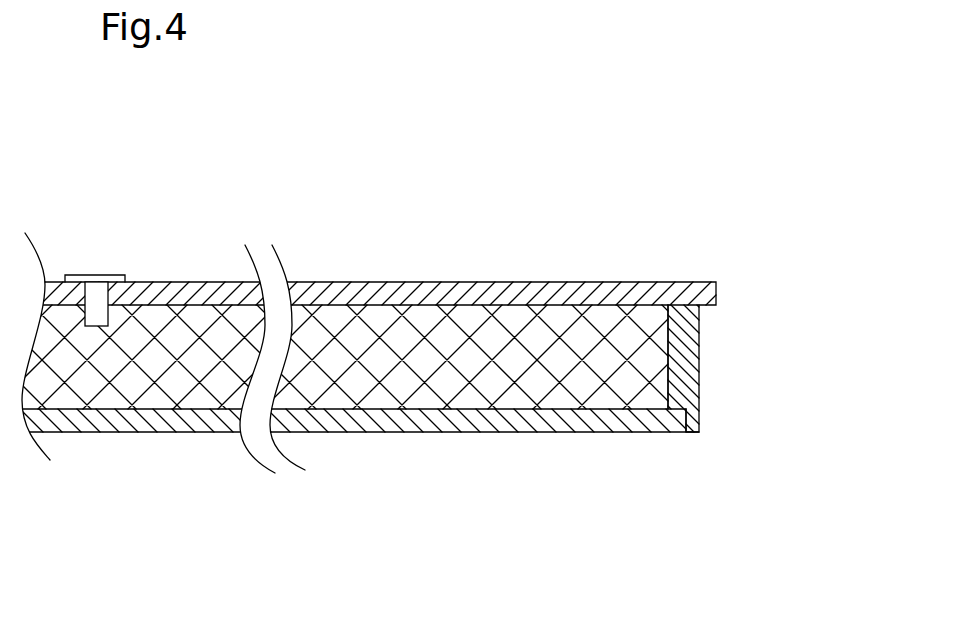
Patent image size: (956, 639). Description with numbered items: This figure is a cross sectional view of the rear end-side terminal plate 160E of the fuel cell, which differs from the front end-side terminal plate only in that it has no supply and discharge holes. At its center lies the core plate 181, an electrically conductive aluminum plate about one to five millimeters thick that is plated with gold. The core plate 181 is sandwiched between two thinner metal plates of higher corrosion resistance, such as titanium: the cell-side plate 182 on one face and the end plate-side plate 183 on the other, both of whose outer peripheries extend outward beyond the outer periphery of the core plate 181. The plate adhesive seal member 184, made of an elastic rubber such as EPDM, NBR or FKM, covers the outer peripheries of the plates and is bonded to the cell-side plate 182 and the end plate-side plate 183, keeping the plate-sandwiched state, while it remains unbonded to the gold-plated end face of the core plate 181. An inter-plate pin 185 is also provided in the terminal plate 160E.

The terminal plate 160E is at (118, 146).
The core plate 181 is at (195, 370).
The cell-side plate 182 is at (147, 432).
The end plate-side plate 183 is at (166, 282).
The plate adhesive seal member 184 is at (698, 383).
The inter-plate pin 185 is at (88, 275).